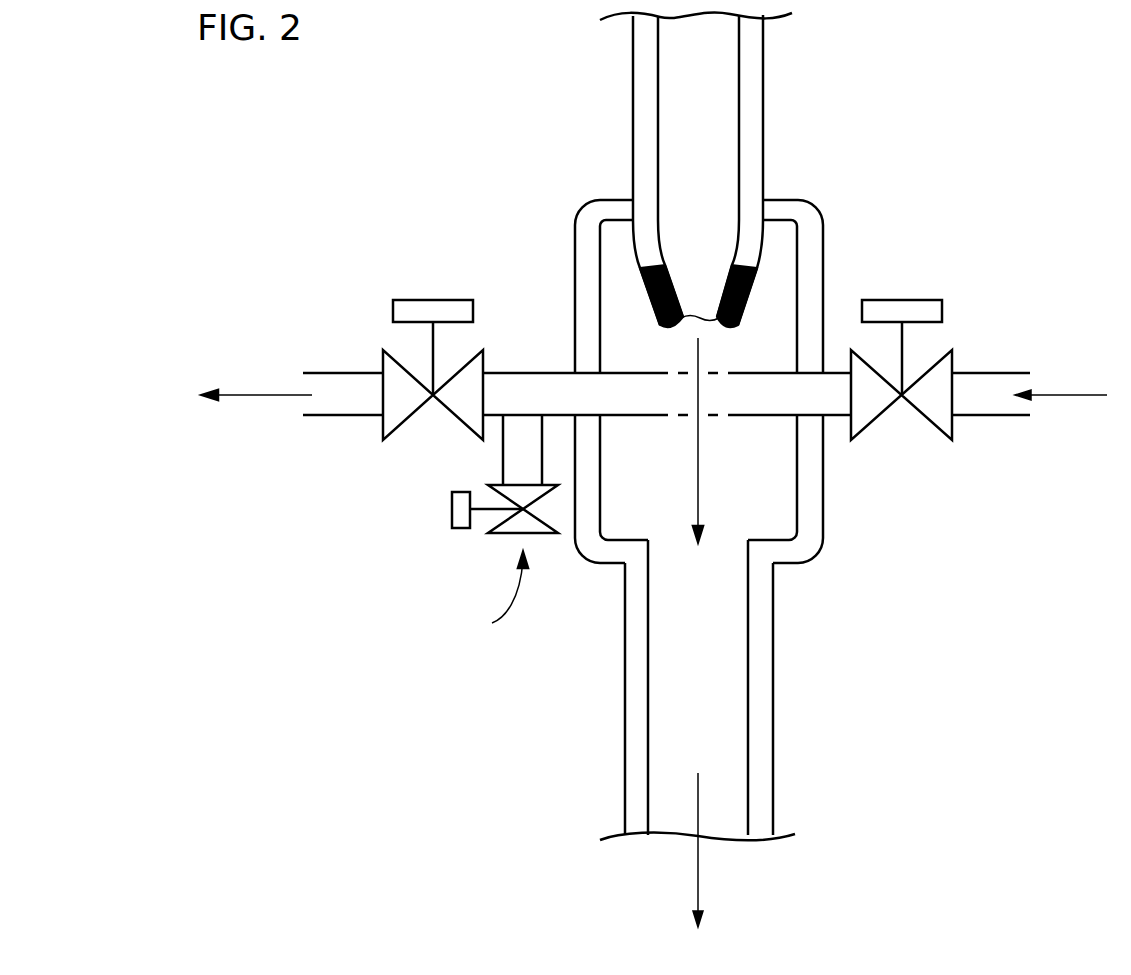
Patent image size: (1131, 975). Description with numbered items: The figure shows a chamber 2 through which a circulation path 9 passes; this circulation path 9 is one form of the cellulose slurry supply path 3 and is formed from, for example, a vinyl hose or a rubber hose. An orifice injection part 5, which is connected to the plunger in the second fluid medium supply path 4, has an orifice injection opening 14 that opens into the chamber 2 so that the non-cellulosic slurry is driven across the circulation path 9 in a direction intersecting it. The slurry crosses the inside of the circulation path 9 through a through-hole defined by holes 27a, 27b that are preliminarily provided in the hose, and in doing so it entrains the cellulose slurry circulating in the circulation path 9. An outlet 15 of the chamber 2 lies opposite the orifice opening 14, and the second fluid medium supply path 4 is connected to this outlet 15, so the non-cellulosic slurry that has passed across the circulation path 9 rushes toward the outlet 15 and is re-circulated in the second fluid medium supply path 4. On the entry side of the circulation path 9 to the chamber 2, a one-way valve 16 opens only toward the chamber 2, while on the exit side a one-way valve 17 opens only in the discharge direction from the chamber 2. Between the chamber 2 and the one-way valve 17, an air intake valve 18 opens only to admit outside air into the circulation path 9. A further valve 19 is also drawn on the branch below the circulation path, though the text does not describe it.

The chamber 2 is at (810, 532).
The cellulose slurry supply path 3 is at (1002, 420).
The second fluid medium supply path 4 is at (777, 745).
The orifice injection part 5 is at (765, 90).
The circulation path 9 is at (992, 380).
The orifice injection opening 14 is at (685, 702).
The outlet 15 is at (757, 278).
The one-way valve 16 is at (703, 545).
The one-way valve 17 is at (908, 305).
The air intake valve 18 is at (413, 300).
The bypass valve 19 is at (457, 528).
The hole 27a is at (683, 372).
The hole 27b is at (713, 417).